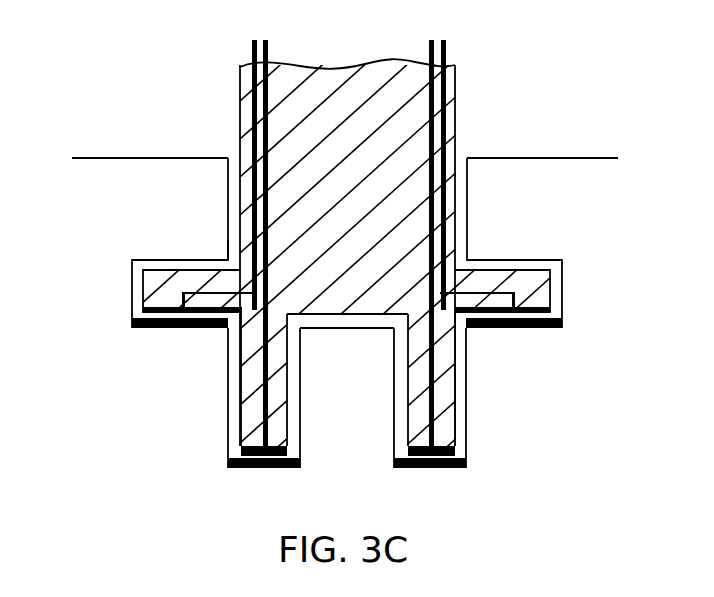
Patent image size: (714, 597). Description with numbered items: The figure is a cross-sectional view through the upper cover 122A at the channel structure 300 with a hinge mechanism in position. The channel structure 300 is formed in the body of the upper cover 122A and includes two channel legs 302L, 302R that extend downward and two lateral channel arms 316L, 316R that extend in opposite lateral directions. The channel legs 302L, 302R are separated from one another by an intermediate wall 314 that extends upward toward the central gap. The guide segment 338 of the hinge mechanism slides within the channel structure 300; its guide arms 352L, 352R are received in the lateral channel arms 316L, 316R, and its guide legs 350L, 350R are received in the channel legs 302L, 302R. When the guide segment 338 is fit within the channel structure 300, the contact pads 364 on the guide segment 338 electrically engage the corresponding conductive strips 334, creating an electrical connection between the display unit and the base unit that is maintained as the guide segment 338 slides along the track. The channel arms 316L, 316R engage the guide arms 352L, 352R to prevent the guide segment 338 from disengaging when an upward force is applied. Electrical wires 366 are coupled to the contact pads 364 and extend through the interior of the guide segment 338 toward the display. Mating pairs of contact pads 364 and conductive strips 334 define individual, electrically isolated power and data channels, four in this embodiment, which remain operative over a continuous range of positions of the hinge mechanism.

The upper cover 122A is at (102, 150).
The channel structure 300 is at (216, 245).
The left channel leg 302L is at (228, 408).
The right channel leg 302R is at (467, 428).
The intermediate wall 314 is at (342, 329).
The left lateral channel arm 316L is at (136, 262).
The right lateral channel arm 316R is at (540, 258).
The conductive strips 334 is at (275, 448).
The guide segment 338 is at (368, 203).
The left guide leg 350L is at (250, 358).
The right guide leg 350R is at (444, 371).
The left guide arm 352L is at (158, 298).
The right guide arm 352R is at (533, 277).
The contact pads 364 is at (246, 469).
The electrical wires 366 is at (253, 53).